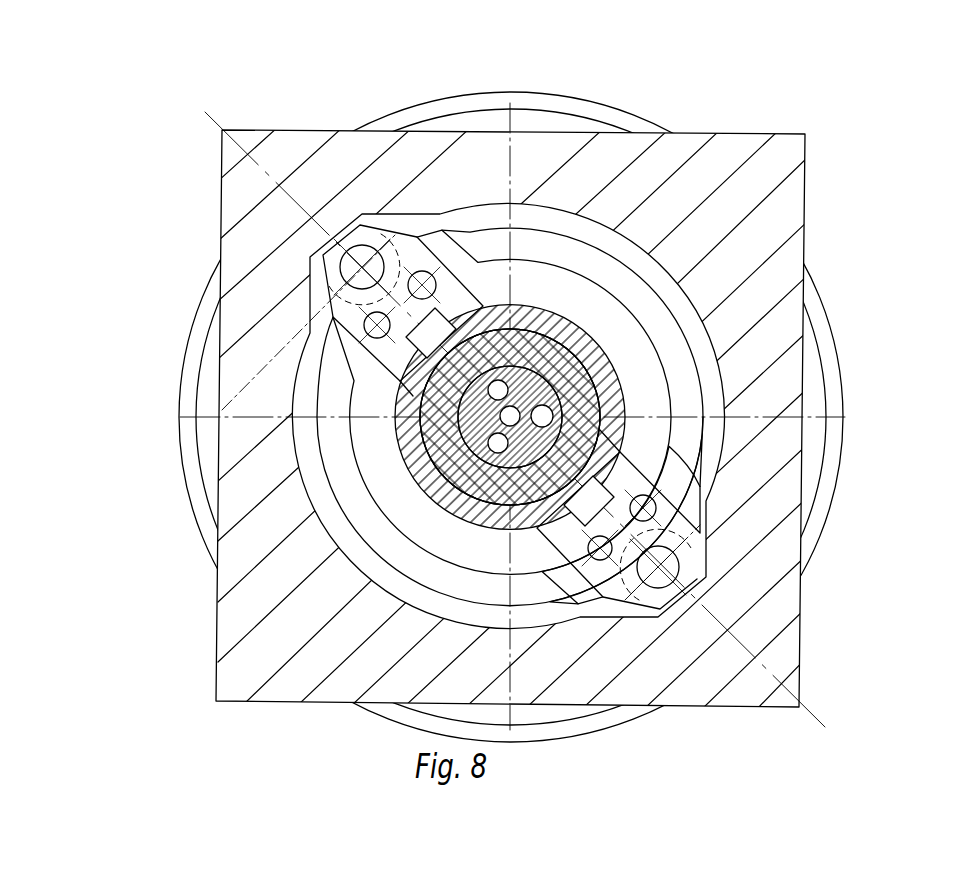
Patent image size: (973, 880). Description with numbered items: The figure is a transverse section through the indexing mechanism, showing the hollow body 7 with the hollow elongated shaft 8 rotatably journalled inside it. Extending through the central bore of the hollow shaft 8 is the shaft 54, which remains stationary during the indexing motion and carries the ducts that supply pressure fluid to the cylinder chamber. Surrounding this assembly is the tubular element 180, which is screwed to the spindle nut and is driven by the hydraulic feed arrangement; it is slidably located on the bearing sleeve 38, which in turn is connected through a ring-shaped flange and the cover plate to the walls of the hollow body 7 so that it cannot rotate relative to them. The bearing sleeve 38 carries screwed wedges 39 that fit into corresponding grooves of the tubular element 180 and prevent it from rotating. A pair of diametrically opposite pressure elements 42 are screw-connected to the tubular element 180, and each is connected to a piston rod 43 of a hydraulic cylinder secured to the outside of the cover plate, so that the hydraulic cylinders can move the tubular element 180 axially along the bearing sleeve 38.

The hollow body 7 is at (745, 185).
The hollow elongated shaft 8 is at (600, 428).
The bearing sleeve 38 is at (412, 417).
The screwed wedges 39 is at (600, 492).
The pressure element 42 is at (855, 536).
The piston rod 43 is at (340, 264).
The shaft 54 is at (728, 404).
The tubular element 180 is at (603, 305).